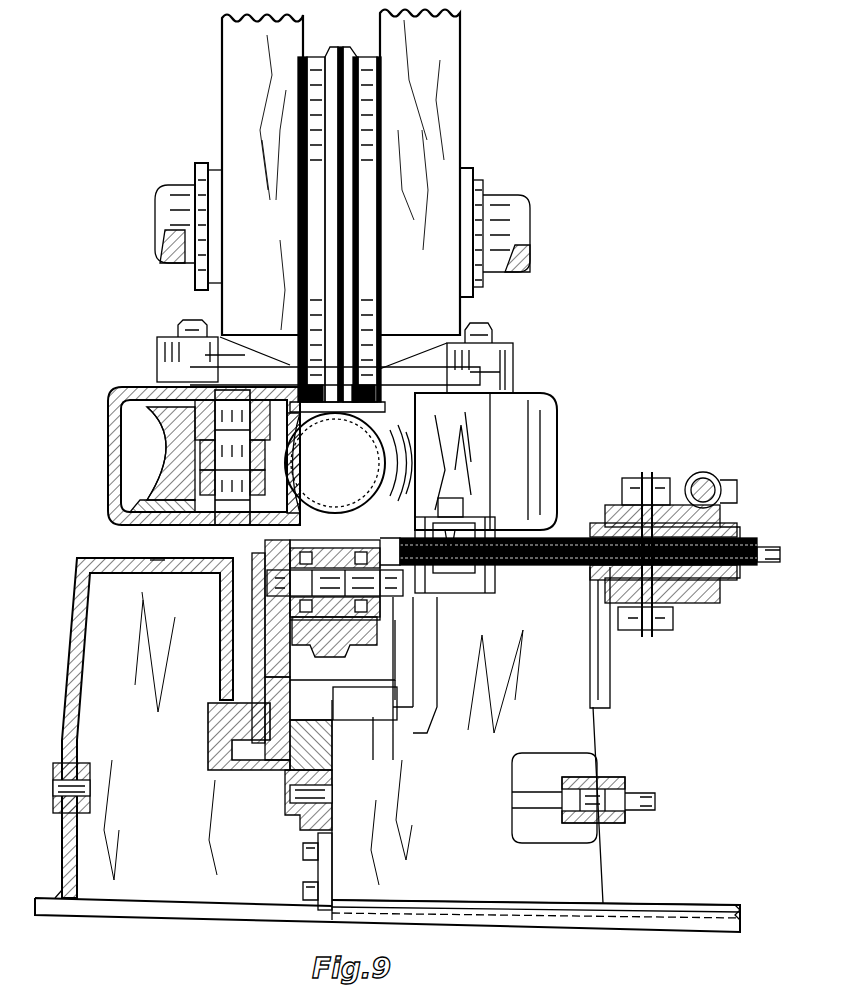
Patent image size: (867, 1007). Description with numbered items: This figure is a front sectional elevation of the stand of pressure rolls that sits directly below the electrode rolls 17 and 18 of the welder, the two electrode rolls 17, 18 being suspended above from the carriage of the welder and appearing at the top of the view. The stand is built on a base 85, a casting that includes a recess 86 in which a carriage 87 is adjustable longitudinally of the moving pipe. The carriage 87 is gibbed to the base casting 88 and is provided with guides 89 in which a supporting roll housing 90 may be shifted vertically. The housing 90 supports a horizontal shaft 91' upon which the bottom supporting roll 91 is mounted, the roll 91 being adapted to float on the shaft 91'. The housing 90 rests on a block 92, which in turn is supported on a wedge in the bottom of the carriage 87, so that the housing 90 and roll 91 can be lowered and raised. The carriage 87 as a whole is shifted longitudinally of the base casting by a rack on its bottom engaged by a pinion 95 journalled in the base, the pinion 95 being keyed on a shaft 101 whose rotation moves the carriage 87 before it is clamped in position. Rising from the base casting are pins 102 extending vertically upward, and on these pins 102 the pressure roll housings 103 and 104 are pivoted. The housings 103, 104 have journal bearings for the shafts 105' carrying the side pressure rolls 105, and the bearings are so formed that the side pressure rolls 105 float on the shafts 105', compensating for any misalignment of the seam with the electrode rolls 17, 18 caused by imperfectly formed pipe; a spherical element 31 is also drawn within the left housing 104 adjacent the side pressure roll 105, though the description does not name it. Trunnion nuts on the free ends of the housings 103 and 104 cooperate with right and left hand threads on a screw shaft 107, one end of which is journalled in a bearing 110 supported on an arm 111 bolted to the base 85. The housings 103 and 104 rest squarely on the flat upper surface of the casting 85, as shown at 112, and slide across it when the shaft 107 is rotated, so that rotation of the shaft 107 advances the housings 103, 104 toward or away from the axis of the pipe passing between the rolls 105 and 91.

The electrode roll 17 is at (406, 178).
The electrode roll 18 is at (337, 288).
The ball 31 is at (292, 478).
The base 85 is at (178, 888).
The recess 86 is at (243, 662).
The carriage 87 is at (250, 628).
The base casting 88 is at (230, 722).
The guides 89 is at (263, 692).
The supporting roll housing 90 is at (383, 663).
The roll 91 is at (376, 589).
The horizontal shaft 91' is at (367, 593).
The block 92 is at (360, 705).
The pinion 95 is at (287, 808).
The shaft 101 is at (540, 800).
The pins 102 is at (187, 347).
The pressure roll housing 103 is at (520, 402).
The pressure roll housing 104 is at (108, 408).
The side pressure rolls 105 is at (126, 453).
The shafts 105' is at (124, 497).
The screw shaft 107 is at (547, 568).
The bearing 110 is at (615, 513).
The plate 111 is at (613, 655).
The flat upper surface 112 is at (155, 560).